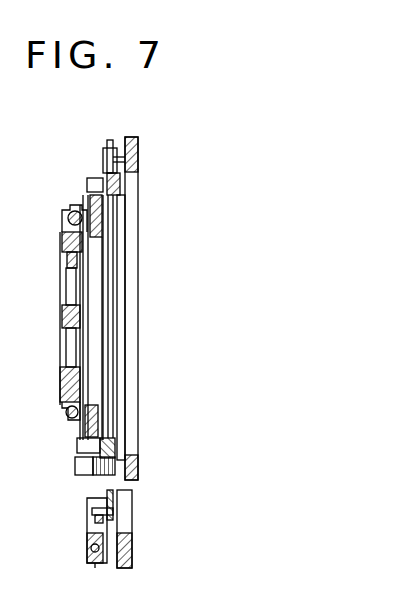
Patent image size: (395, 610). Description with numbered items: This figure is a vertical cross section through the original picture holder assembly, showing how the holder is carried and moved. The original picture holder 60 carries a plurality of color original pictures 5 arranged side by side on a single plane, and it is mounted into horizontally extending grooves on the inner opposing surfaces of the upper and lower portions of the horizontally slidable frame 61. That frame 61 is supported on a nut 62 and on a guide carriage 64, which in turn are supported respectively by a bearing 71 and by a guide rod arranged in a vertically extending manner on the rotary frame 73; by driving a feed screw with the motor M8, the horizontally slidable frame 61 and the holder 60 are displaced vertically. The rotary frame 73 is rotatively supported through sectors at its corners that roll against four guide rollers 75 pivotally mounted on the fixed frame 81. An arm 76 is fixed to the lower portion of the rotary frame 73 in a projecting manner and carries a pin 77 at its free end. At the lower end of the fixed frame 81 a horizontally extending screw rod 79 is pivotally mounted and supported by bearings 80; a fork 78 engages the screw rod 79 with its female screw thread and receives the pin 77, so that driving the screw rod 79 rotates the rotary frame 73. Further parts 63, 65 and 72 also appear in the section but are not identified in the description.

The color original pictures 5 is at (66, 286).
The original picture holder 60 is at (65, 318).
The horizontally slidable frame 61 is at (62, 240).
The nut 62 is at (62, 390).
The bolt 63 is at (66, 416).
The guide carriage 64 is at (68, 213).
The bracket 65 is at (87, 188).
The bearing 71 is at (103, 162).
The bearing 72 is at (100, 180).
The rotary frame 73 is at (121, 188).
The guide rollers 75 is at (110, 140).
The arm 76 is at (132, 500).
The pin 77 is at (92, 504).
The fork 78 is at (87, 520).
The screw rod 79 is at (95, 568).
The bearings 80 is at (87, 548).
The fixed frame 81 is at (138, 160).
The motor M8 is at (75, 470).